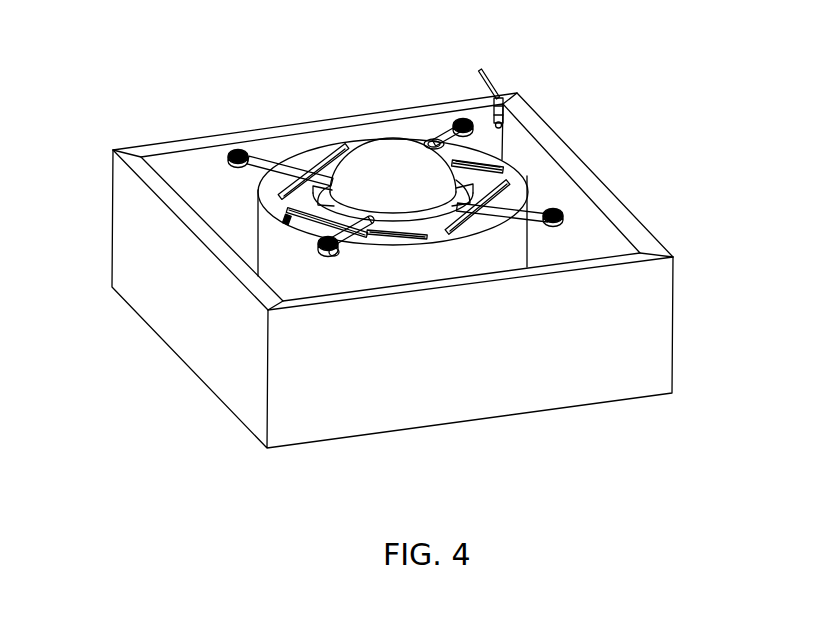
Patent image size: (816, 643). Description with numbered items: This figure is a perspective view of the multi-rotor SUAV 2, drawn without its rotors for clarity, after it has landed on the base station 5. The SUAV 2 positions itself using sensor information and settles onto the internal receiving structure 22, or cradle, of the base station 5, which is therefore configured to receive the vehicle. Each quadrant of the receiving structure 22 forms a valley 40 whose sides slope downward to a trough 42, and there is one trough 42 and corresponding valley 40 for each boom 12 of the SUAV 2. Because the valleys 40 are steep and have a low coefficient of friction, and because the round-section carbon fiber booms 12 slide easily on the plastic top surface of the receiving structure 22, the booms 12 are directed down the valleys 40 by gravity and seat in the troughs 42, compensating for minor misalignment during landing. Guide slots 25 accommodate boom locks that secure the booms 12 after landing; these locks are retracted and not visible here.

The SUAV 2 is at (376, 140).
The base station 5 is at (570, 148).
The booms 12 is at (262, 162).
The internal receiving structure 22 is at (528, 243).
The guide slots 25 is at (285, 222).
The valley 40 is at (487, 223).
The trough 42 is at (285, 180).